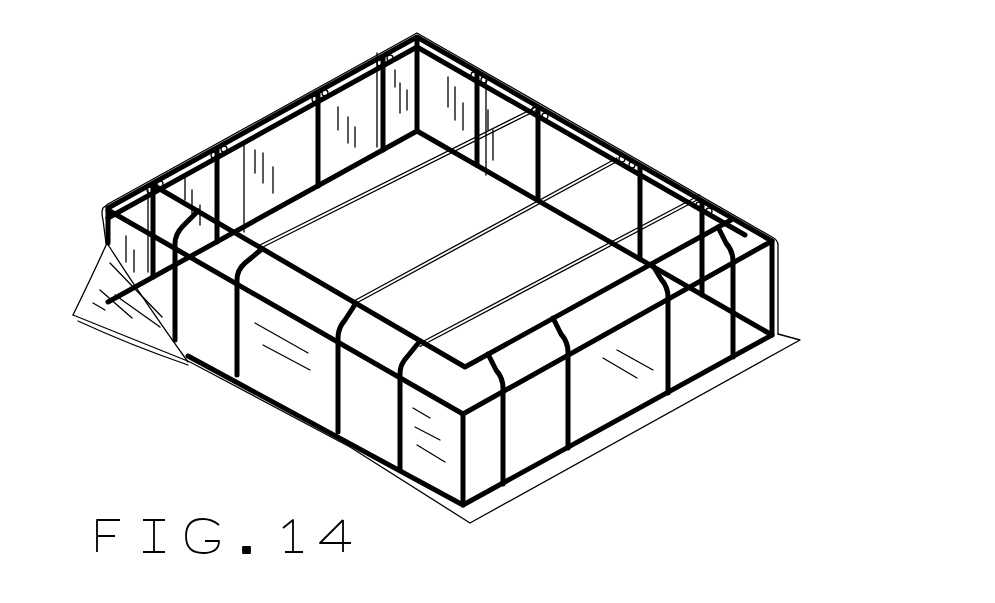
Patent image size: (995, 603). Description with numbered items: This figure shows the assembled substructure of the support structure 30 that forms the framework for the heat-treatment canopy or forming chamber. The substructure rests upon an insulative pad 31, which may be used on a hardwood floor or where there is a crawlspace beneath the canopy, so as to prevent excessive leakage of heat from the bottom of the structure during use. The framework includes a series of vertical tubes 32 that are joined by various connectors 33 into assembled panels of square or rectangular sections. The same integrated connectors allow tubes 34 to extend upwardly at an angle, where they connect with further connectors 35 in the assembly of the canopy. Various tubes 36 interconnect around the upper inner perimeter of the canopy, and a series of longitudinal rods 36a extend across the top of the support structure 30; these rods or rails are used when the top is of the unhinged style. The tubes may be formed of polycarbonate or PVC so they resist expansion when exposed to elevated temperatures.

The support structure 30 is at (747, 227).
The insulative pad 31 is at (436, 383).
The vertical tubes 32 is at (778, 292).
The connectors 33 is at (773, 244).
The tubes 34 is at (698, 193).
The connectors 35 is at (625, 156).
The tubes 36 is at (307, 274).
The longitudinal rods 36a is at (403, 175).